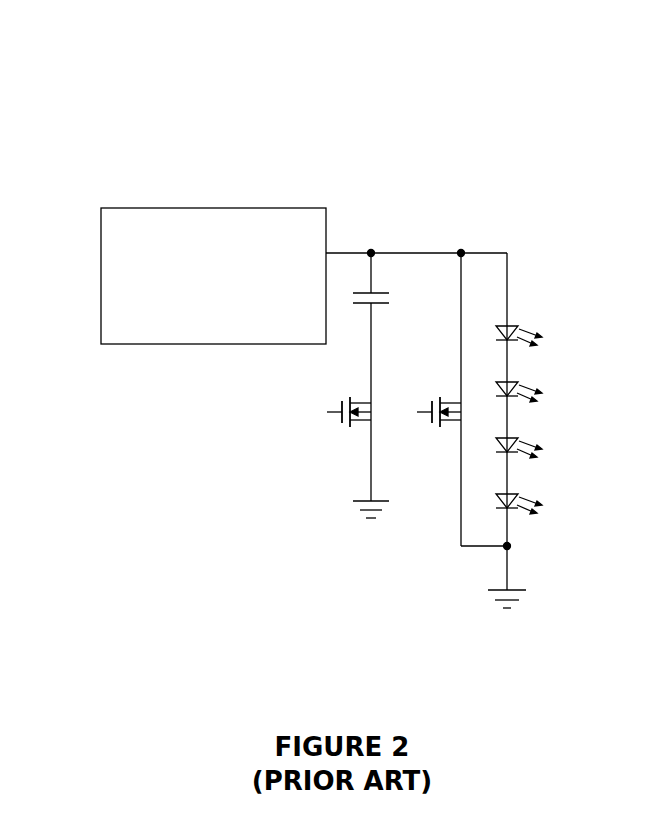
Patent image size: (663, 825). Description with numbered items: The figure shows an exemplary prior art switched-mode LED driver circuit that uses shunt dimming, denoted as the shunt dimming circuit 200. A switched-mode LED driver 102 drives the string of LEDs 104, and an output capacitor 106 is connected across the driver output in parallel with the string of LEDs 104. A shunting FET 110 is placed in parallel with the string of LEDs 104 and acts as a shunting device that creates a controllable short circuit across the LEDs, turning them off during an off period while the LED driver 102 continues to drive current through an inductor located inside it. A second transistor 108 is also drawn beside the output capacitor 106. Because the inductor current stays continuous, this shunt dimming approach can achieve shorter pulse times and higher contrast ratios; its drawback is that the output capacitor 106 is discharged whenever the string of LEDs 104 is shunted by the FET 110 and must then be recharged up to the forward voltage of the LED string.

The shunt dimming circuit 200 is at (355, 86).
The LED driver 102 is at (101, 275).
The string of LEDs 104 is at (570, 352).
The output capacitor 106 is at (381, 311).
The transistor 108 is at (345, 431).
The shunting FET 110 is at (435, 431).